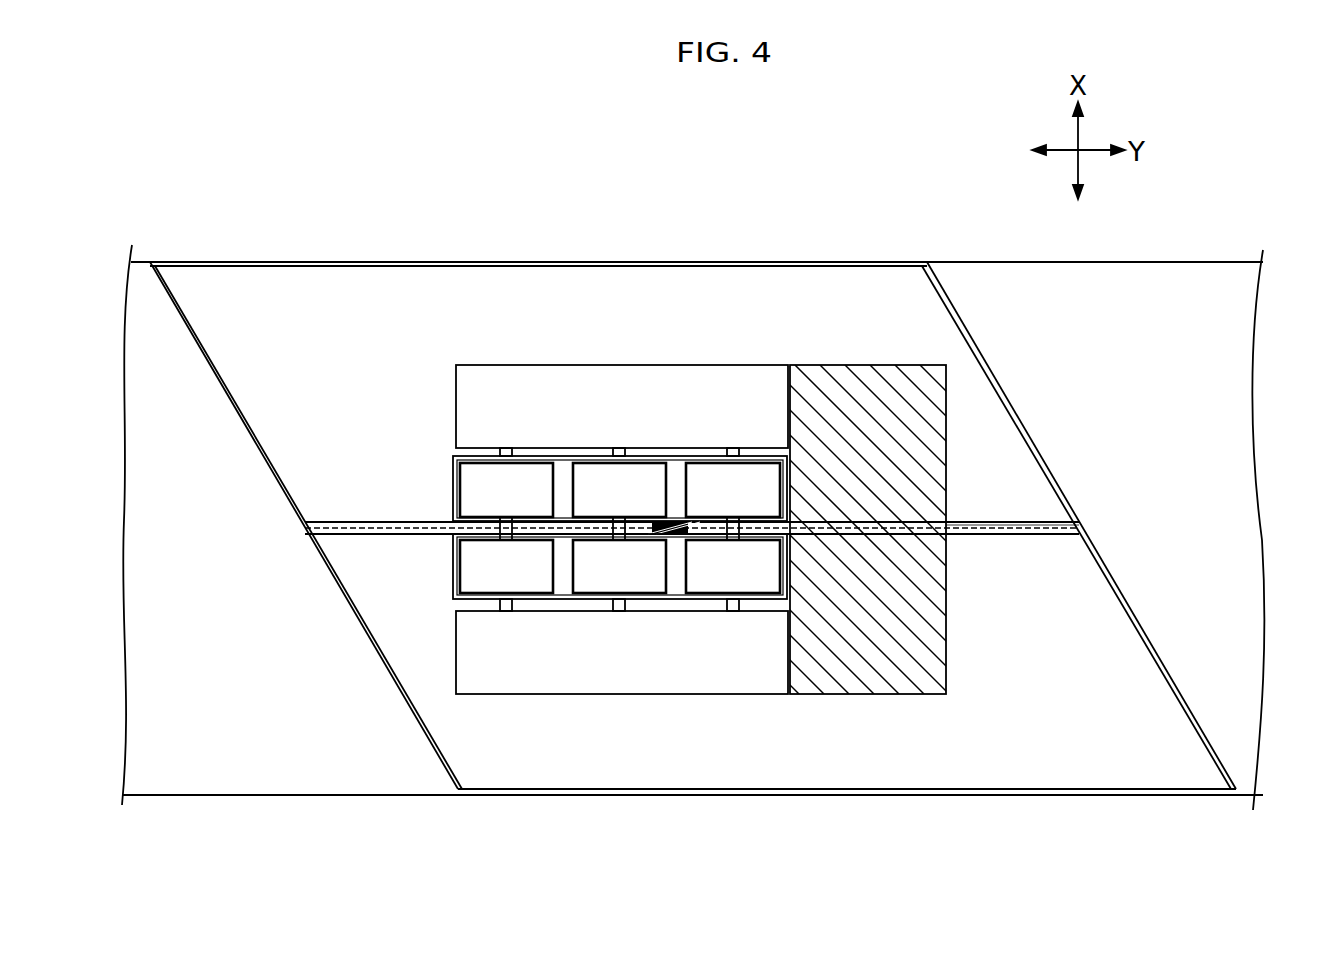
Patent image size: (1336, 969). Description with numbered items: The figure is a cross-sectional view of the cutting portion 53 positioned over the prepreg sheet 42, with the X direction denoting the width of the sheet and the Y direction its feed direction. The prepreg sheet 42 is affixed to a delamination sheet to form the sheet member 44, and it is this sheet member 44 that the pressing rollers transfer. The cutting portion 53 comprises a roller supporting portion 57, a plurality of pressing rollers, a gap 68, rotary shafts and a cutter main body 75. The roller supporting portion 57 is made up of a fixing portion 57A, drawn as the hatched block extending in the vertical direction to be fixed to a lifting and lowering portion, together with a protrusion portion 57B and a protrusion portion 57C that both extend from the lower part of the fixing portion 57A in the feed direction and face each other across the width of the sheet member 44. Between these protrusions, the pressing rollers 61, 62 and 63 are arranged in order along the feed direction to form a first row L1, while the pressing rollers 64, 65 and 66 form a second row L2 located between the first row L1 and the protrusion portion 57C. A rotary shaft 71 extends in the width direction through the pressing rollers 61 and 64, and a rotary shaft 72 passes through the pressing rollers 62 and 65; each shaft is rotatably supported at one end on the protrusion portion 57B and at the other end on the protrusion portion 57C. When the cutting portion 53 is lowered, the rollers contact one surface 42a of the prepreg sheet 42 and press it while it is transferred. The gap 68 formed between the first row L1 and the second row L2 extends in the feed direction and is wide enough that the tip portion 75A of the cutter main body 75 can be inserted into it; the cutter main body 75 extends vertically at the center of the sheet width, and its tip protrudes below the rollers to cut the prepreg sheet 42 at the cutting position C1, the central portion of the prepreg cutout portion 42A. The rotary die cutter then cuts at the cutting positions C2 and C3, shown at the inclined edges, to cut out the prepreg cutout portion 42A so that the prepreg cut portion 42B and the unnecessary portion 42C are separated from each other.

The prepreg sheet 42 is at (188, 767).
The one surface of the prepreg sheet 42a is at (276, 772).
The prepreg cutout portion 42A is at (725, 592).
The prepreg cut portion 42B is at (815, 523).
The unnecessary portion 42C is at (862, 790).
The sheet member 44 is at (228, 803).
The cutting portion 53 is at (724, 338).
The roller supporting portion 57 is at (619, 353).
The fixing portion 57A is at (885, 364).
The protrusion portion 57B is at (480, 681).
The protrusion portion 57C is at (472, 403).
The pressing roller 61 is at (752, 585).
The pressing roller 62 is at (640, 585).
The pressing roller 63 is at (528, 585).
The pressing roller 64 is at (705, 475).
The pressing roller 65 is at (593, 474).
The pressing roller 66 is at (481, 475).
The gap 68 is at (692, 690).
The rotary shaft 71 is at (737, 450).
The rotary shaft 72 is at (511, 450).
The tip portion 75A is at (683, 707).
The cutter main body 75 is at (673, 535).
The cutting position C1 is at (992, 527).
The cutting position C2 is at (383, 673).
The cutting position C3 is at (1168, 675).
The first row L1 is at (620, 688).
The second row L2 is at (568, 416).